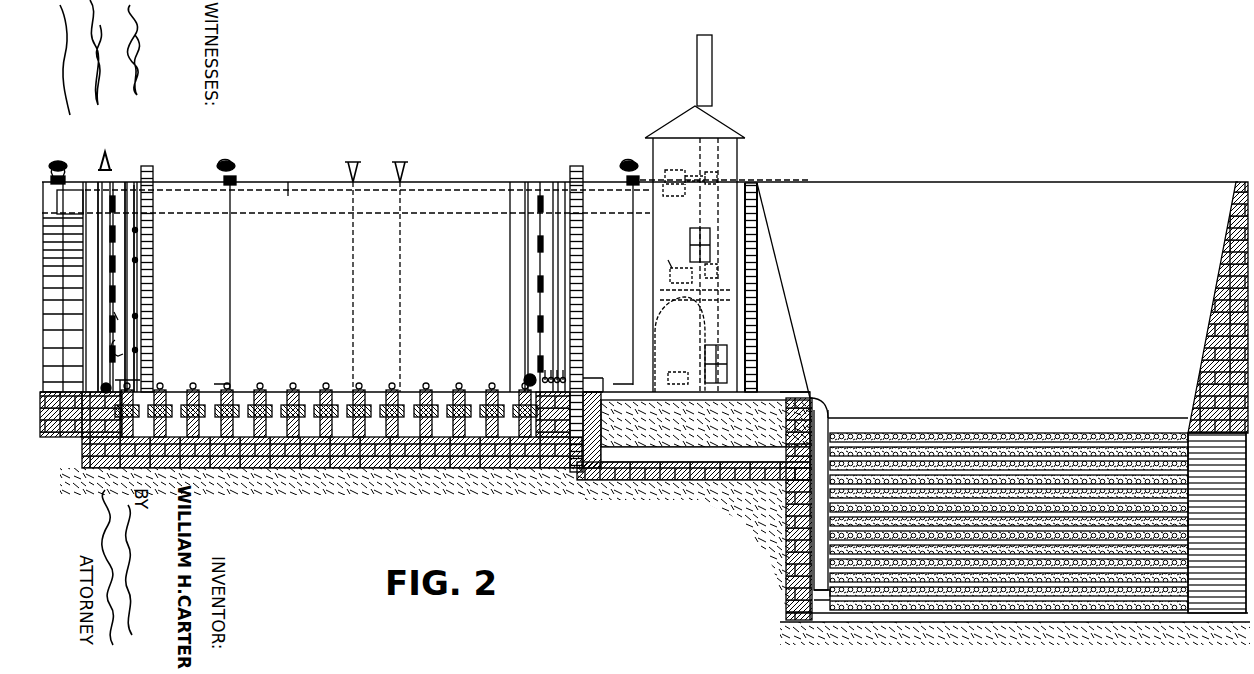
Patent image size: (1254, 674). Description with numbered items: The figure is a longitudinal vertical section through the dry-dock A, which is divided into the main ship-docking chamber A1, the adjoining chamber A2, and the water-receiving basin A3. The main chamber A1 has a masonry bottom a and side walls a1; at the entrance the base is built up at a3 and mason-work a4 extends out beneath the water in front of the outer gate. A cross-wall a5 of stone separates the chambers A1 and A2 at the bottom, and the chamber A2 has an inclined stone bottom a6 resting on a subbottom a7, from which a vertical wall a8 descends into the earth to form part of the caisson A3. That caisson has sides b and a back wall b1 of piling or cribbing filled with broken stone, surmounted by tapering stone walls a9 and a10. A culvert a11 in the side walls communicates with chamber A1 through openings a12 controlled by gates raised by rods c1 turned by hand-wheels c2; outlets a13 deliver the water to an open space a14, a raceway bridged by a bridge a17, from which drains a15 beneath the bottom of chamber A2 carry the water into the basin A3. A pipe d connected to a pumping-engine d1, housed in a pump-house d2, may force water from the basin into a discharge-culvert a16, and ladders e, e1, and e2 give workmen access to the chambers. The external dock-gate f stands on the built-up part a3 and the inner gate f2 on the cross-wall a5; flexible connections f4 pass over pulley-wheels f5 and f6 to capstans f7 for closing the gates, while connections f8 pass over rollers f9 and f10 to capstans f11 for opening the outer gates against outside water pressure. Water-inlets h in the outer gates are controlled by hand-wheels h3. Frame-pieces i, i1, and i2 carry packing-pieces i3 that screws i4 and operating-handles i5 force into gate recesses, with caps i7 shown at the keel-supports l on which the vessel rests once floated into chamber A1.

The dry-dock A is at (447, 162).
The main chamber A1 is at (433, 296).
The chamber A2 is at (608, 304).
The water-receiving basin A3 is at (1006, 304).
The bottom a is at (295, 450).
The side wall a1 is at (286, 256).
The built-up part a3 is at (100, 422).
The mason-work a4 is at (51, 378).
The cross-wall a5 is at (552, 445).
The inclined bottom a6 is at (786, 394).
The subbottom a7 is at (656, 478).
The vertical wall a8 is at (786, 600).
The stone wall a9 is at (973, 254).
The stone wall a10 is at (1212, 276).
The culvert a11 is at (505, 458).
The opening a12 is at (342, 384).
The outlet a13 is at (705, 423).
The open space a14 is at (588, 398).
The drain a15 is at (705, 454).
The discharge-culvert a16 is at (135, 150).
The bridge a17 is at (606, 382).
The side b is at (967, 436).
The back wall b1 is at (1185, 425).
The rod c1 is at (399, 260).
The hand-wheel c2 is at (380, 150).
The pipe d is at (876, 412).
The pumping-engine d1 is at (694, 305).
The engine house d2 is at (725, 145).
The ladder e is at (150, 365).
The ladder e1 is at (545, 302).
The ladder e2 is at (759, 345).
The dock-gate f is at (87, 287).
The dock-gate f2 is at (562, 266).
The flexible connection f4 is at (214, 384).
The pulley-wheel f5 is at (122, 318).
The pulley-wheel f6 is at (236, 176).
The capstan f7 is at (218, 170).
The flexible connection f8 is at (50, 324).
The roller f9 is at (72, 356).
The pulley-wheel f10 is at (70, 180).
The capstan f11 is at (60, 160).
The water-inlet h is at (124, 352).
The hand-wheel h3 is at (147, 168).
The frame-piece i is at (128, 330).
The frame-piece i1 is at (130, 244).
The frame-piece i2 is at (105, 278).
The packing-piece i3 is at (524, 376).
The screw i4 is at (116, 302).
The operating-handle i5 is at (138, 314).
The pier cap i7 is at (300, 392).
The keel-support l is at (162, 384).